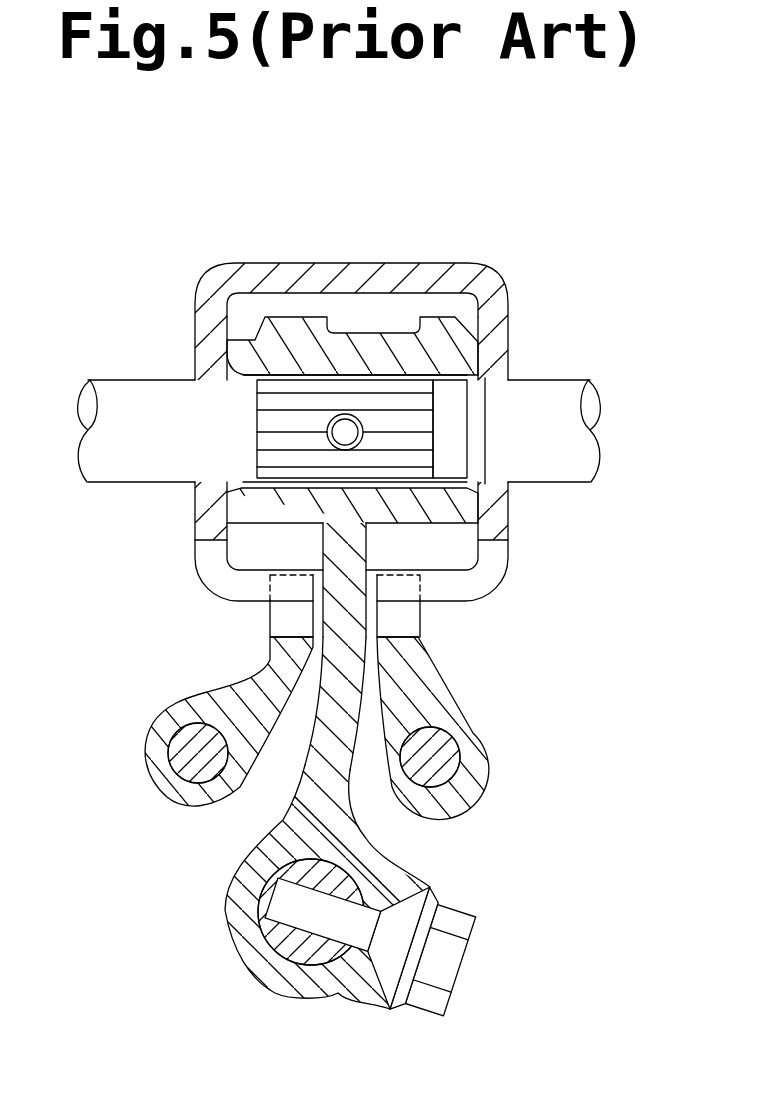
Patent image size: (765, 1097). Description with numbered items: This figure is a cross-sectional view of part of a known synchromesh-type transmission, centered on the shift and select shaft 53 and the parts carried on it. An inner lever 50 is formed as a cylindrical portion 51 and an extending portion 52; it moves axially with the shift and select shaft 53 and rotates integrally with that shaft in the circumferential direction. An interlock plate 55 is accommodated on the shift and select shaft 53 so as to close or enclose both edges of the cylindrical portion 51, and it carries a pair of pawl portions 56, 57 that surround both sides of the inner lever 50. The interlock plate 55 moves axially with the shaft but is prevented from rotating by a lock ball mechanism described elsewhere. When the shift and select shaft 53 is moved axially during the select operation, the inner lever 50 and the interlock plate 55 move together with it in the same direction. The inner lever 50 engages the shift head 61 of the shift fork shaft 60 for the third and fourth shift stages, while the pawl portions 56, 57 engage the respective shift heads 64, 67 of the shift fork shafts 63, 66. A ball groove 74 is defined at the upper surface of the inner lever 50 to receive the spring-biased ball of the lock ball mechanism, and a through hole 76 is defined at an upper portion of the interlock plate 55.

The inner lever 50 is at (264, 538).
The cylindrical portion 51 is at (440, 511).
The extending portion 52 is at (360, 547).
The shift and select shaft 53 is at (584, 402).
The interlock plate 55 is at (518, 277).
The pawl portion 56 is at (242, 587).
The pawl portion 57 is at (463, 593).
The shift fork shaft 60 is at (283, 994).
The shift head 61 is at (347, 653).
The shift fork shaft 63 is at (182, 753).
The shift head 64 is at (221, 703).
The shift fork shaft 66 is at (448, 757).
The shift head 67 is at (427, 698).
The ball groove 74 is at (364, 332).
The through hole 76 is at (455, 278).